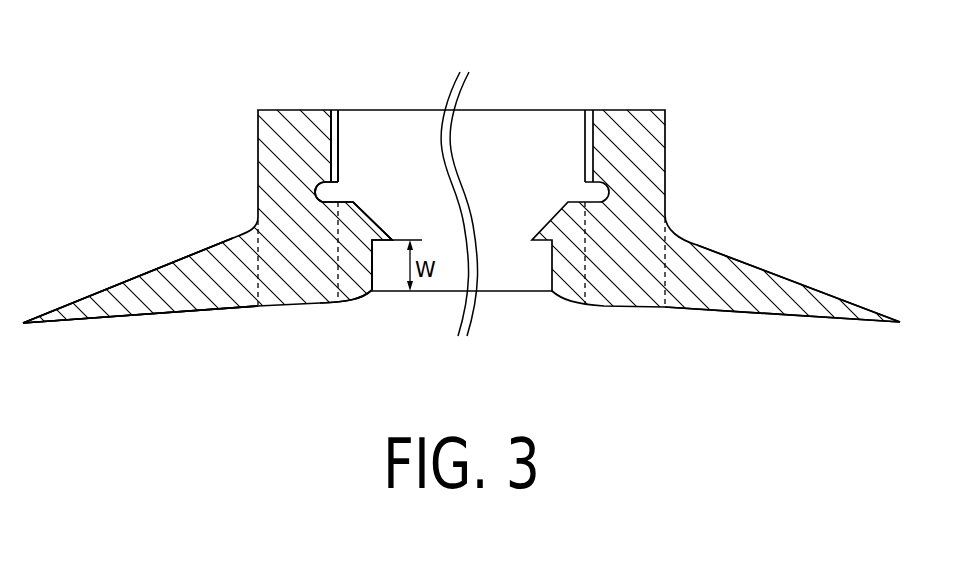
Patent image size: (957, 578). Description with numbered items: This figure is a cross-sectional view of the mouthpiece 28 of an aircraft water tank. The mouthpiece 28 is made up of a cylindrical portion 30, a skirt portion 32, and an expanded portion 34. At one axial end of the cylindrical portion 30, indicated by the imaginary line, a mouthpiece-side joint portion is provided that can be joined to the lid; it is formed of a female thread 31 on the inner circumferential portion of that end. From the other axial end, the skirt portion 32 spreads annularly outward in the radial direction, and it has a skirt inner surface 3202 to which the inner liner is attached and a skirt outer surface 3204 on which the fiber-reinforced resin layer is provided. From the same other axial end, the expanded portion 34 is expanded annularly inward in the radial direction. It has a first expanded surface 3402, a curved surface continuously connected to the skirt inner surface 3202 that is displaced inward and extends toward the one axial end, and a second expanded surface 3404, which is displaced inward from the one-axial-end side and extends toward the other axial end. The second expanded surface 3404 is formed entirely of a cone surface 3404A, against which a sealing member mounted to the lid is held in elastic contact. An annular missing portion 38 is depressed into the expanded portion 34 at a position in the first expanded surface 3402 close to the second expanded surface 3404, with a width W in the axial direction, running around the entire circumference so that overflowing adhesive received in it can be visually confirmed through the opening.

The mouthpiece 28 is at (527, 108).
The cylindrical portion 30 is at (298, 230).
The female thread 31 is at (320, 160).
The skirt portion 32 is at (170, 262).
The skirt inner surface 3202 is at (125, 318).
The skirt outer surface 3204 is at (110, 287).
The expanded portion 34 is at (352, 260).
The first expanded surface 3402 is at (367, 300).
The second expanded surface 3404 is at (372, 219).
The cone surface 3404A is at (334, 192).
The annular missing portion 38 is at (373, 270).